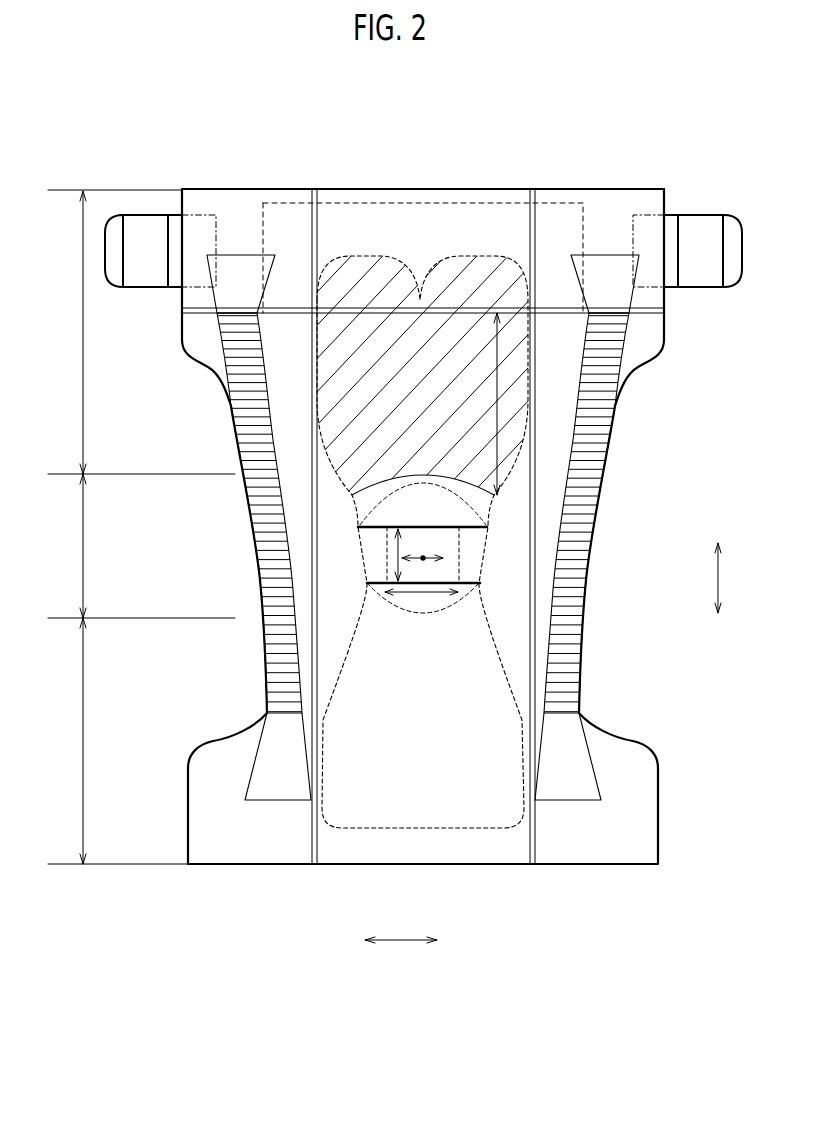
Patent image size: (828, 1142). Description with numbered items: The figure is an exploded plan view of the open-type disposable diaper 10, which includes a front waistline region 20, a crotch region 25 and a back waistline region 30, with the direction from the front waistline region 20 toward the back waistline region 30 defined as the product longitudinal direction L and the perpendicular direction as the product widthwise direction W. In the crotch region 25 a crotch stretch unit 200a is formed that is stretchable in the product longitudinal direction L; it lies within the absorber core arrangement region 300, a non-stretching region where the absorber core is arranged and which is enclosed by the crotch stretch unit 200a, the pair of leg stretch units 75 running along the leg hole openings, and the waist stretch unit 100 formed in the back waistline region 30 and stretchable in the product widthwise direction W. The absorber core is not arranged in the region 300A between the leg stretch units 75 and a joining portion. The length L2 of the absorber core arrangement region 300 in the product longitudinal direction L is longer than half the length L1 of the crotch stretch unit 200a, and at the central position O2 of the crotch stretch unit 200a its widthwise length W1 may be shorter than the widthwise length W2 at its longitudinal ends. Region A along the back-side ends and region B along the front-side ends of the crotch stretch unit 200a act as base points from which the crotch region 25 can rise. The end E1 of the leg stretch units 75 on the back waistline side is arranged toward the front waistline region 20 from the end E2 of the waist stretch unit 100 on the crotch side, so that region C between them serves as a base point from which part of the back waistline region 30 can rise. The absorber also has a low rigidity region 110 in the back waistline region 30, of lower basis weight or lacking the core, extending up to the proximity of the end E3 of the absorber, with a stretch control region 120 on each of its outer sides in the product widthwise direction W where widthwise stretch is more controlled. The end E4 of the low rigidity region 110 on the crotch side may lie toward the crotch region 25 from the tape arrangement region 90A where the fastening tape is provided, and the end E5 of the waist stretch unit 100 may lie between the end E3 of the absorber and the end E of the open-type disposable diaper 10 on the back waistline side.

The open-type disposable diaper 10 is at (672, 121).
The front waistline region 20 is at (118, 741).
The crotch region 25 is at (141, 546).
The back waistline region 30 is at (141, 332).
The leg stretch unit 75 is at (577, 593).
The tape arrangement region 90A is at (647, 217).
The waist stretch unit 100 is at (493, 217).
The low rigidity region 110 is at (418, 266).
The stretch control region 120 is at (338, 268).
The crotch stretch unit 200a is at (484, 557).
The absorber core arrangement region 300 is at (413, 353).
The region between the leg stretch units and a joining portion 300A is at (292, 408).
The region A is at (358, 527).
The region B is at (367, 583).
The region C is at (655, 310).
The end at the side of the back waistline region of the open-type disposable diaper E is at (551, 189).
The end at the side of the back waistline region of the leg stretch units E1 is at (262, 306).
The end at the side of the crotch region of the waist stretch unit E2 is at (288, 298).
The end at the side of the back waistline region of the absorber E3 is at (433, 256).
The end at the side of the crotch region of the low rigidity region E4 is at (420, 298).
The end at the side of the back waistline region of the waist stretch unit E5 is at (465, 203).
The product longitudinal direction L is at (725, 578).
The length of the crotch stretch unit in the product longitudinal direction L1 is at (412, 555).
The length of the absorber core arrangement region in the product longitudinal direc L2 is at (485, 404).
The central position of the crotch stretch unit in the product longitudinal directio O2 is at (424, 560).
The product widthwise direction W is at (401, 952).
The length in the product widthwise direction in the central position of the crotch W1 is at (416, 565).
The length in the product widthwise direction at the ends of the crotch stretch unit W2 is at (403, 597).